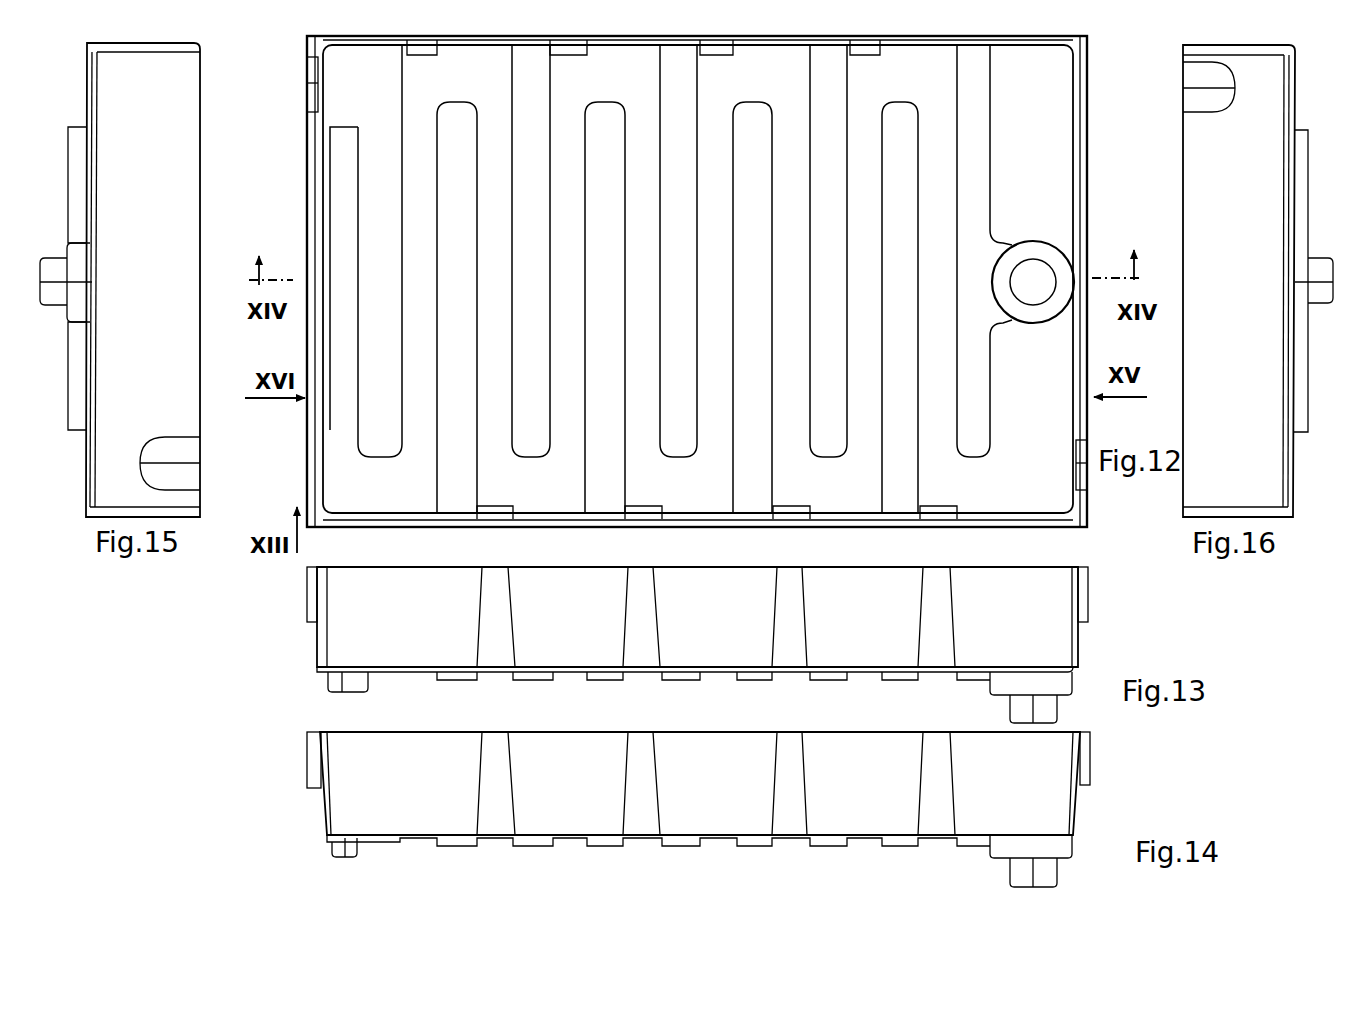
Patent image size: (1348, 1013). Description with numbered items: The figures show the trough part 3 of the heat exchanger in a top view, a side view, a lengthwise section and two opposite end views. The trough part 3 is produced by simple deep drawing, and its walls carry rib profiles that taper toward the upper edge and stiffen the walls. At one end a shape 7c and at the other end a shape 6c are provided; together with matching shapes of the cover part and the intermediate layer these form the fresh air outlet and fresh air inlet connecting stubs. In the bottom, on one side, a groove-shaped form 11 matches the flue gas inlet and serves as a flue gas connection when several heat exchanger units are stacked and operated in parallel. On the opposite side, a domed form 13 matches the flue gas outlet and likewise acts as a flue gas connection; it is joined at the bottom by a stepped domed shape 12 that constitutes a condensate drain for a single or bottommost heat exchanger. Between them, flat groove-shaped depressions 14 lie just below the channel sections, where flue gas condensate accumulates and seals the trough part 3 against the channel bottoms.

In FIG. 12, the trough part 3 is at (297, 213).
In FIG. 15, the trough part 3 is at (209, 410).
In FIG. 16, the trough part 3 is at (1176, 488).
In FIG. 13, the trough part 3 is at (292, 648).
In FIG. 14, the trough part 3 is at (692, 719).
In FIG. 12, the fresh air inlet shape 6c is at (1077, 478).
In FIG. 15, the fresh air inlet shape 6c is at (166, 451).
In FIG. 13, the fresh air inlet shape 6c is at (1078, 590).
In FIG. 14, the fresh air inlet shape 6c is at (1090, 760).
In FIG. 12, the fresh air outlet shape 7c is at (305, 68).
In FIG. 16, the fresh air outlet shape 7c is at (1209, 105).
In FIG. 13, the fresh air outlet shape 7c is at (305, 595).
In FIG. 14, the fresh air outlet shape 7c is at (325, 756).
In FIG. 12, the groove-shaped form 11 is at (343, 428).
In FIG. 15, the groove-shaped form 11 is at (79, 214).
In FIG. 16, the groove-shaped form 11 is at (1294, 354).
In FIG. 13, the groove-shaped form 11 is at (368, 672).
In FIG. 14, the groove-shaped form 11 is at (372, 838).
In FIG. 12, the stepped domed shape 12 is at (1011, 291).
In FIG. 15, the stepped domed shape 12 is at (54, 272).
In FIG. 16, the stepped domed shape 12 is at (1306, 305).
In FIG. 13, the stepped domed shape 12 is at (1058, 715).
In FIG. 14, the stepped domed shape 12 is at (1058, 878).
In FIG. 12, the domed form 13 is at (1048, 313).
In FIG. 15, the domed form 13 is at (83, 309).
In FIG. 13, the domed form 13 is at (1073, 690).
In FIG. 14, the domed form 13 is at (1075, 848).
In FIG. 12, the flat groove-shaped depressions 14 is at (524, 432).
In FIG. 14, the flat groove-shaped depressions 14 is at (600, 829).